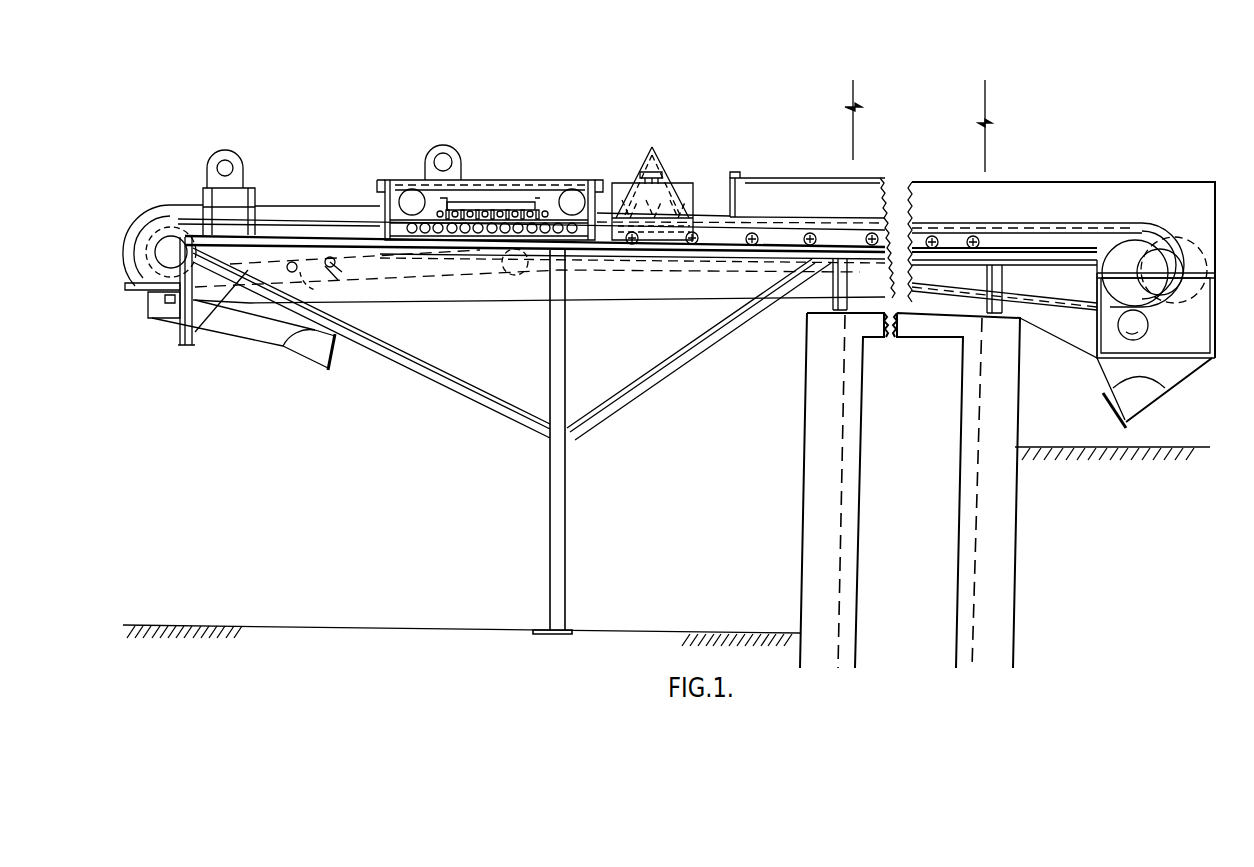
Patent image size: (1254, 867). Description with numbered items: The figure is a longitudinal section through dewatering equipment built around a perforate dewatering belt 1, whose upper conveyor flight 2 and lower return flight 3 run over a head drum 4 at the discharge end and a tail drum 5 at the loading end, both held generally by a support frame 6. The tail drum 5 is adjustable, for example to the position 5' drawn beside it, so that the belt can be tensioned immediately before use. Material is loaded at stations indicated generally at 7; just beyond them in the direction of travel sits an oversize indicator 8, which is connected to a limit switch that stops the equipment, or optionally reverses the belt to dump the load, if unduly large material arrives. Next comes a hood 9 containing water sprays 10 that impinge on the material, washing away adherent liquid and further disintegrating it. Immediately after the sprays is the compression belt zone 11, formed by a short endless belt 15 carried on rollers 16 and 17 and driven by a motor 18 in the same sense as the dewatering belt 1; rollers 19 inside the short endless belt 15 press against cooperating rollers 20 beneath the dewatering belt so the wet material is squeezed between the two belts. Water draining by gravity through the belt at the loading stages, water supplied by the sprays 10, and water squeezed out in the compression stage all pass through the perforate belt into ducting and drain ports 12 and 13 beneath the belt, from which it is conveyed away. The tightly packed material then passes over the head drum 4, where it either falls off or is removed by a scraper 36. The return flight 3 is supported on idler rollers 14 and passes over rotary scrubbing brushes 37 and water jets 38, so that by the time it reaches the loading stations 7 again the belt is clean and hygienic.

The dewatering belt 1 is at (778, 215).
The conveyor flight 2 is at (318, 213).
The return flight 3 is at (422, 285).
The head drum 4 is at (185, 250).
The tail drum 5 is at (1142, 227).
The tail drum position 5' is at (1174, 226).
The support frame 6 is at (352, 340).
The loading stations 7 is at (845, 107).
The oversize indicator 8 is at (730, 190).
The hood 9 is at (660, 170).
The water sprays 10 is at (636, 200).
The compression belt zone 11 is at (557, 190).
The drain port 12 is at (290, 352).
The drain port 13 is at (1140, 395).
The idler rollers 14 is at (515, 276).
The short endless belt 15 is at (530, 188).
The roller 16 is at (410, 190).
The roller 17 is at (582, 192).
The motor 18 is at (418, 198).
The rollers 19 is at (497, 210).
The cooperating rollers 20 is at (465, 234).
The scraper 36 is at (140, 290).
The rotary scrubbing brushes 37 is at (1133, 340).
The water jets 38 is at (292, 262).